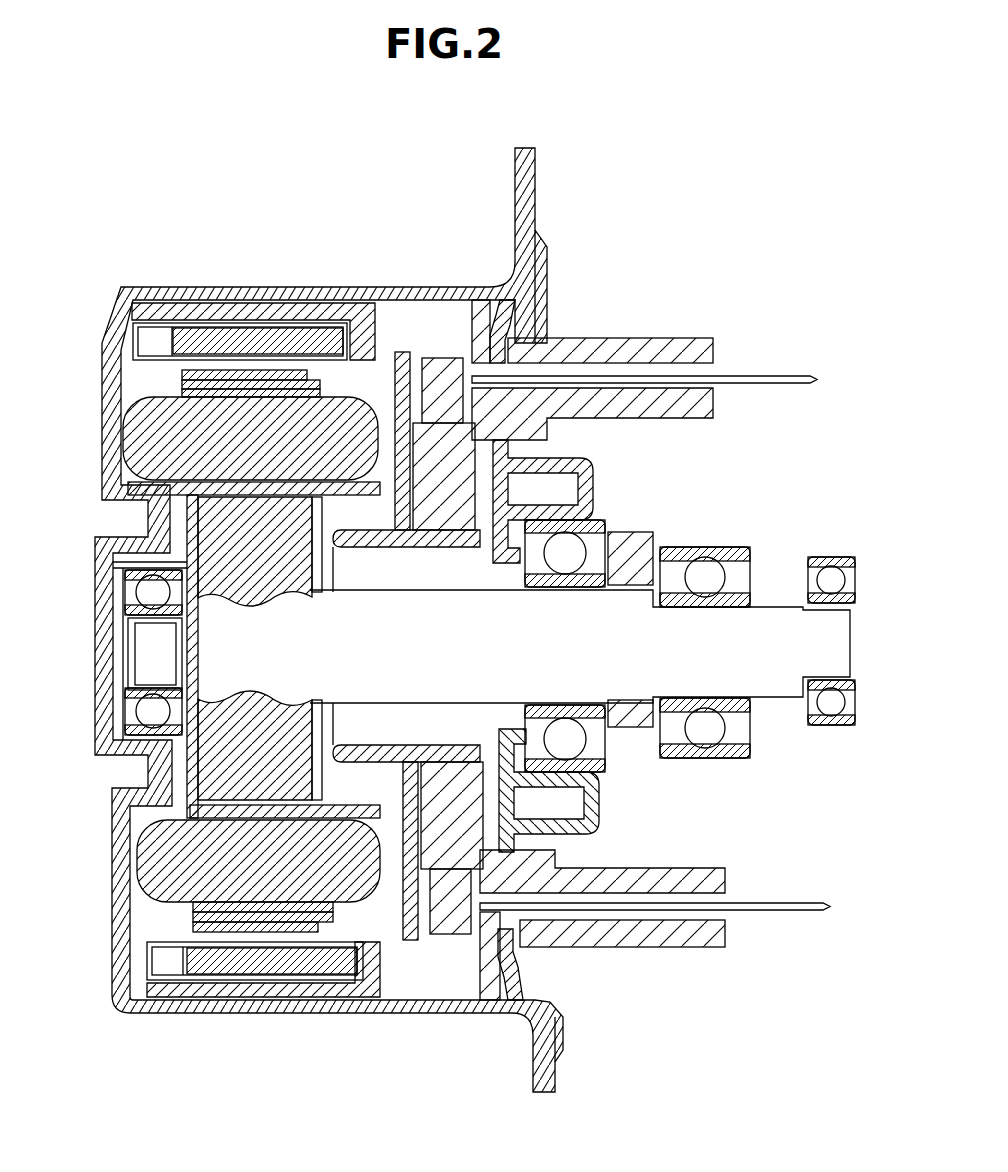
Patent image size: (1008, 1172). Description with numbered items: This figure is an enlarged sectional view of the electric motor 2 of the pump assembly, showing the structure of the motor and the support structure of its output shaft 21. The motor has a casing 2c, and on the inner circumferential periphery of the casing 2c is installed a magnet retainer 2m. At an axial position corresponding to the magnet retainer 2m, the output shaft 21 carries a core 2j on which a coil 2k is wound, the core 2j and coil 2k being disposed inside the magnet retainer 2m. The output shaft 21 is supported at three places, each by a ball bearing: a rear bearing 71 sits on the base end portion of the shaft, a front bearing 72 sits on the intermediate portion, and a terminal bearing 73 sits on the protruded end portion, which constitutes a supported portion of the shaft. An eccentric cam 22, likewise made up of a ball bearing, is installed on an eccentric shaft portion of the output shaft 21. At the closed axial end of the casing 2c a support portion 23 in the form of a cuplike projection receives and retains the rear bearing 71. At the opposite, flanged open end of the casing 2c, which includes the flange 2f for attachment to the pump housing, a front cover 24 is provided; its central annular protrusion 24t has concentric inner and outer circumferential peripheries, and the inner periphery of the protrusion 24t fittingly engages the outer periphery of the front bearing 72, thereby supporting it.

The electric motor 2 is at (357, 285).
The flange 2f is at (513, 175).
The casing 2c is at (188, 286).
The magnet retainer 2m is at (253, 320).
The core 2j is at (180, 387).
The coil 2k is at (178, 437).
The output shaft 21 is at (607, 620).
The eccentric cam 22 is at (755, 550).
The support portion 23 is at (104, 742).
The front cover 24 is at (508, 330).
The annular protrusion 24t is at (595, 477).
The rear bearing 71 is at (124, 592).
The front bearing 72 is at (612, 770).
The terminal bearing 73 is at (840, 555).